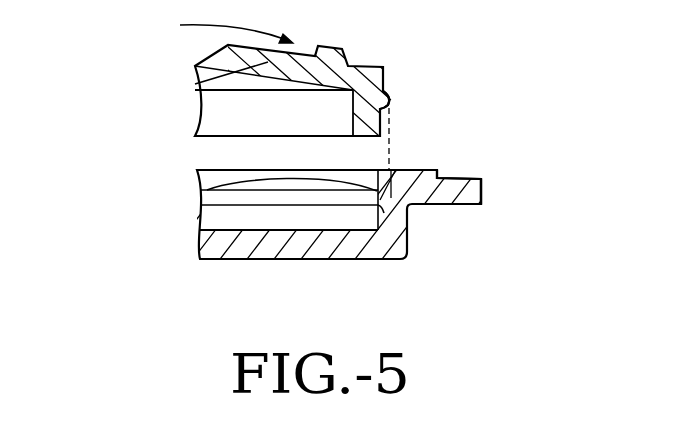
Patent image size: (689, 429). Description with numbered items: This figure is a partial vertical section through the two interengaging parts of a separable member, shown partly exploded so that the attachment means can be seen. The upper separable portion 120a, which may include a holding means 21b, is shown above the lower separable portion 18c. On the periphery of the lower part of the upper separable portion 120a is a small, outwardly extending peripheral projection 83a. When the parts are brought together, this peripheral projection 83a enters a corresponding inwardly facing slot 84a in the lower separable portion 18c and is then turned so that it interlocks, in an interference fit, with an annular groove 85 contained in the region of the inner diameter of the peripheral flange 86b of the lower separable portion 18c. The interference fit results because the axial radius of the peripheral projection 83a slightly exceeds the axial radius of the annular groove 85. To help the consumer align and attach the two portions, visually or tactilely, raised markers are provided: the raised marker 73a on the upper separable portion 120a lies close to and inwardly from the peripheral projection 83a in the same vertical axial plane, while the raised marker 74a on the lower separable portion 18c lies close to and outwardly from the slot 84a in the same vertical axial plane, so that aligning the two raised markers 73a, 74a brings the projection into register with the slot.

The upper separable portion 120a is at (209, 27).
The raised marker 73a is at (343, 49).
The holding means 21b is at (195, 85).
The peripheral projection 83a is at (391, 97).
The raised marker 74a is at (432, 168).
The peripheral flange 86b is at (482, 190).
The slot 84a is at (377, 172).
The annular groove 85 is at (207, 190).
The lower separable portion 18c is at (250, 262).